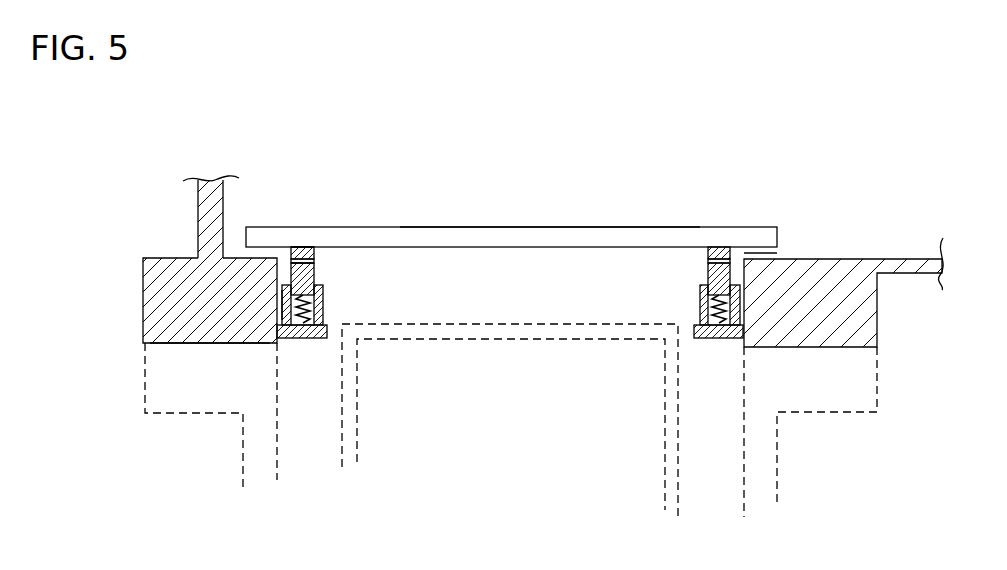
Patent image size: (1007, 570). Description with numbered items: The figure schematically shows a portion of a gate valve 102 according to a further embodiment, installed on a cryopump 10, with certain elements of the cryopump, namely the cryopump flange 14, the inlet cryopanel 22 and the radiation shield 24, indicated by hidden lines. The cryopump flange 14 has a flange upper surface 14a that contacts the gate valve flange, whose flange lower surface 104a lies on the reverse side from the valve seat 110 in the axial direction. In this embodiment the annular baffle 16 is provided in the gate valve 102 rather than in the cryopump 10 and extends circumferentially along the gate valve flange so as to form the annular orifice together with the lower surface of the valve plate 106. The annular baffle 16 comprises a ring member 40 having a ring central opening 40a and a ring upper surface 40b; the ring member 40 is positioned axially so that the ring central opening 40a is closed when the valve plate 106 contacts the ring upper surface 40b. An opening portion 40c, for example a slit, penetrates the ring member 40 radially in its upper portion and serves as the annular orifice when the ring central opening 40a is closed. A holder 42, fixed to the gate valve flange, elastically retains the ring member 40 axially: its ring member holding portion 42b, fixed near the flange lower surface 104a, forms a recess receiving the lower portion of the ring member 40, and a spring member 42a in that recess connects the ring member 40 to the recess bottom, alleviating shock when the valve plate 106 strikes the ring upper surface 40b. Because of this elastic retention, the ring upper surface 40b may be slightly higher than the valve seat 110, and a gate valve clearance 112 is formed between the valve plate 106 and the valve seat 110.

The cryopump 10 is at (232, 459).
The cryopump flange 14 is at (168, 368).
The flange upper surface 14a is at (195, 343).
The annular baffle 16 is at (488, 152).
The inlet cryopanel 22 is at (608, 339).
The radiation shield 24 is at (678, 472).
The ring member 40 is at (328, 277).
The ring central opening 40a is at (562, 267).
The ring upper surface 40b is at (308, 247).
The opening portion 40c is at (298, 247).
The holder 42 is at (342, 303).
The spring member 42a is at (291, 298).
The ring member holding portion 42b is at (302, 340).
The gate valve 102 is at (186, 198).
The flange lower surface 104a is at (217, 343).
The valve plate 106 is at (662, 226).
The valve seat 110 is at (769, 257).
The gate valve clearance 112 is at (752, 253).